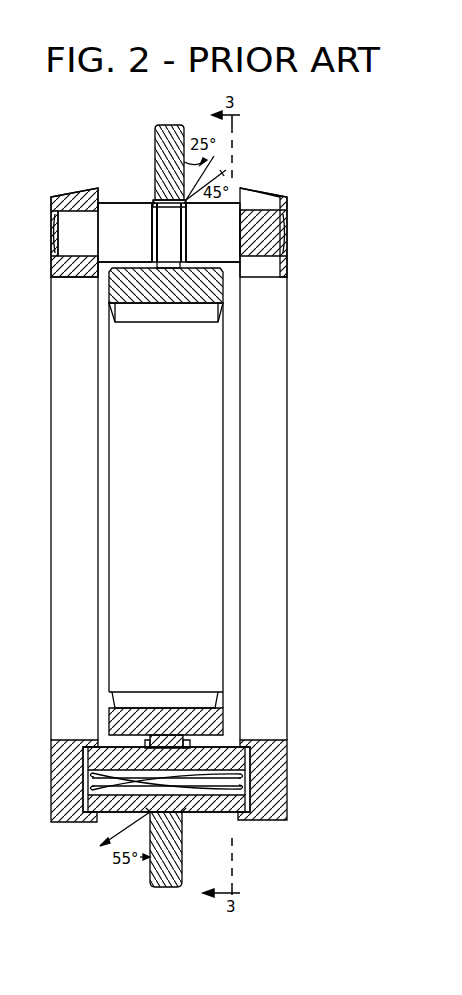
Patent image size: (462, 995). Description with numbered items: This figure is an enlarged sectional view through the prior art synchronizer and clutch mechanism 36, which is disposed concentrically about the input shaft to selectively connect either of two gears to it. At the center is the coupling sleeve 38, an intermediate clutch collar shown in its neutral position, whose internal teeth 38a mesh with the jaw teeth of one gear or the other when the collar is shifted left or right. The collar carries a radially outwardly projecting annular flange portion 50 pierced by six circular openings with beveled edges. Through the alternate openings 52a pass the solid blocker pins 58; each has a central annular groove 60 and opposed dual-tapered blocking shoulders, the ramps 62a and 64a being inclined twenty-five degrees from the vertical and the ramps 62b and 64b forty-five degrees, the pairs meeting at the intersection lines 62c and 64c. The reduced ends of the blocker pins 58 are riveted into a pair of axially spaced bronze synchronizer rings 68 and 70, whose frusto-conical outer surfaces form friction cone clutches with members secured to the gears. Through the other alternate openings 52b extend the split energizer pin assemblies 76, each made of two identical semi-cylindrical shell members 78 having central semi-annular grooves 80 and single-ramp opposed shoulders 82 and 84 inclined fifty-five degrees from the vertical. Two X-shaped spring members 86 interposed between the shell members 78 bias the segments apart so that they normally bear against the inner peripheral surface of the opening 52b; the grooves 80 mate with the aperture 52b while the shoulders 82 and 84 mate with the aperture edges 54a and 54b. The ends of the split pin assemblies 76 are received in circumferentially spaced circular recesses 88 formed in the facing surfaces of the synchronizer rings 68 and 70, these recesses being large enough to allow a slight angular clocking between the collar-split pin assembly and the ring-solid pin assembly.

The synchronizer and clutch mechanism 36 is at (251, 147).
The coupling sleeve 38 is at (118, 298).
The internal teeth 38a is at (164, 312).
The annular flange portion 50 is at (157, 134).
The alternate openings 52a is at (122, 278).
The other alternate openings 52b is at (172, 832).
The aperture edge 54a is at (155, 200).
The aperture edge 54b is at (216, 278).
The blocker pins 58 is at (108, 206).
The central annular groove 60 is at (169, 232).
The blocking shoulder 62a is at (150, 232).
The blocking shoulder 62b is at (150, 216).
The intersection line 62c is at (150, 246).
The blocking shoulder 64a is at (190, 232).
The blocking shoulder 64b is at (190, 216).
The intersection line 64c is at (190, 246).
The synchronizer ring 68 is at (54, 196).
The synchronizer ring 70 is at (282, 194).
The split pin assembly 76 is at (107, 746).
The shell members 78 is at (228, 760).
The semi-annular grooves 80 is at (165, 738).
The shoulder 82 is at (148, 704).
The shoulder 84 is at (193, 740).
The spring members 86 is at (236, 775).
The circular recesses 88 is at (62, 760).